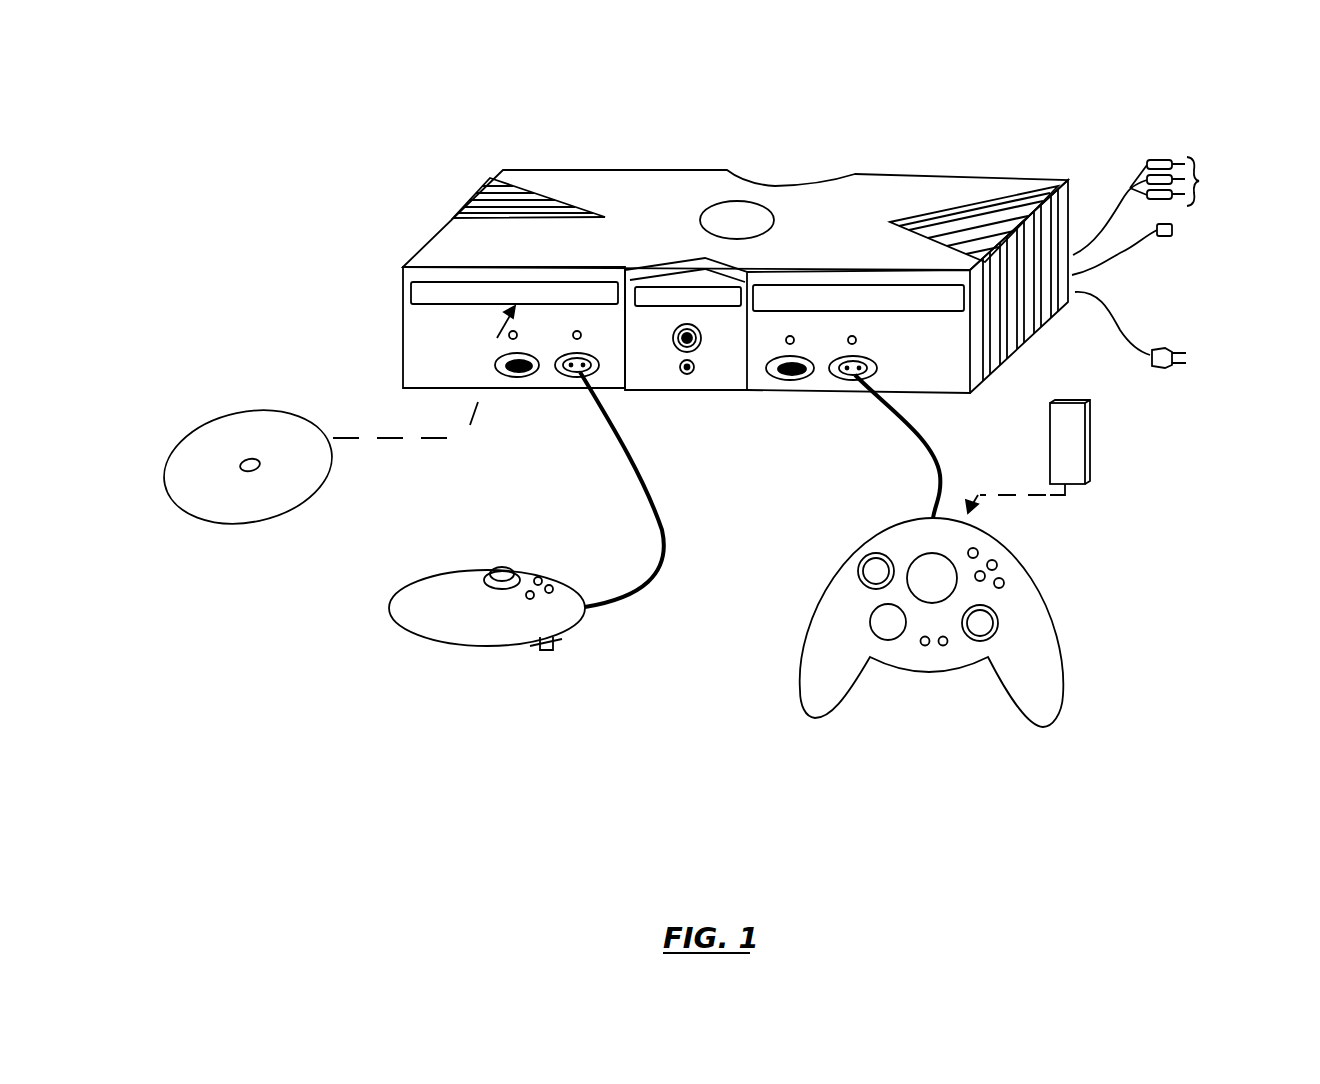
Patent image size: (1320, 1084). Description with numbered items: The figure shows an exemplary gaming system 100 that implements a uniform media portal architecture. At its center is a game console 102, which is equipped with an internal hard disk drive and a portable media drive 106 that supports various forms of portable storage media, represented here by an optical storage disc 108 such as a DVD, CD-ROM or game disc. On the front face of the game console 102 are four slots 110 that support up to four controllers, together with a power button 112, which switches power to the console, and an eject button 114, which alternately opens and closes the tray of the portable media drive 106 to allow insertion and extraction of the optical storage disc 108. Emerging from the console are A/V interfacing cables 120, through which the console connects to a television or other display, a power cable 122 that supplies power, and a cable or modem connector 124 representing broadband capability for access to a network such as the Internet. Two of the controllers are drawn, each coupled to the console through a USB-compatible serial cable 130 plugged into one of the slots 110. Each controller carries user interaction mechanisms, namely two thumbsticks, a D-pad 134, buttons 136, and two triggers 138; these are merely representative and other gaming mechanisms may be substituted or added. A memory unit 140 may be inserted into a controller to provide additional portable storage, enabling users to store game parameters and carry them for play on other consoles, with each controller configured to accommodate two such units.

The gaming system 100 is at (937, 65).
The game console 102 is at (553, 170).
The portable media drive 106 is at (422, 292).
The optical storage disc 108 is at (265, 513).
The slots 110 is at (572, 373).
The power button 112 is at (687, 376).
The eject button 114 is at (687, 326).
The A/V interfacing cables 120 is at (1157, 158).
The power cable 122 is at (1160, 367).
The cable or modem connector 124 is at (1124, 253).
The serial cables 130 is at (660, 500).
The D-pad 134 is at (870, 622).
The buttons 136 is at (995, 565).
The triggers 138 is at (556, 645).
The memory unit 140 is at (1095, 440).